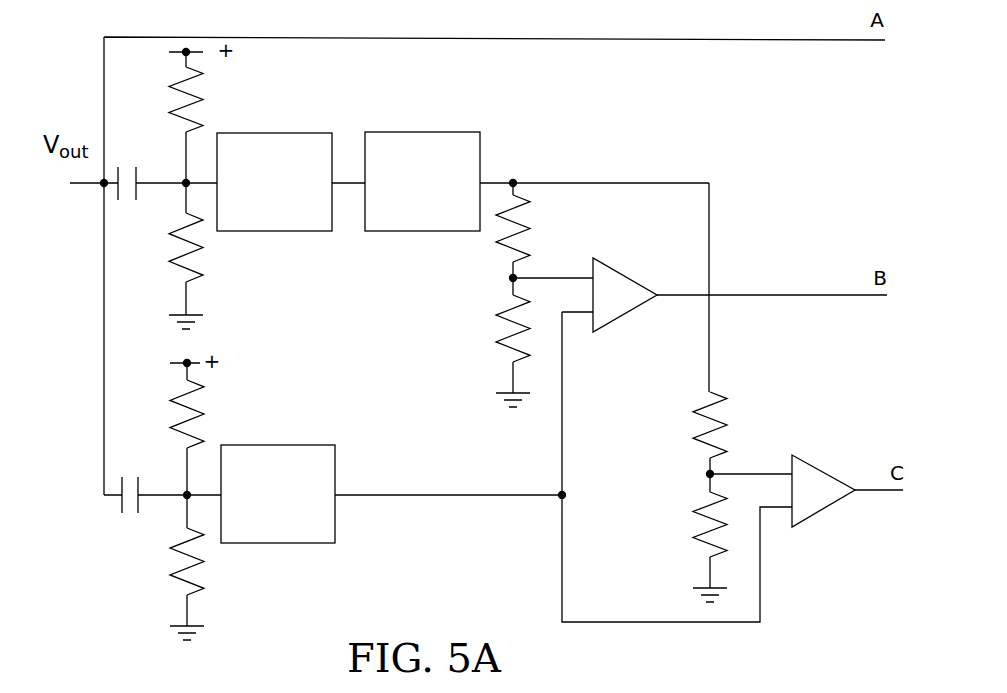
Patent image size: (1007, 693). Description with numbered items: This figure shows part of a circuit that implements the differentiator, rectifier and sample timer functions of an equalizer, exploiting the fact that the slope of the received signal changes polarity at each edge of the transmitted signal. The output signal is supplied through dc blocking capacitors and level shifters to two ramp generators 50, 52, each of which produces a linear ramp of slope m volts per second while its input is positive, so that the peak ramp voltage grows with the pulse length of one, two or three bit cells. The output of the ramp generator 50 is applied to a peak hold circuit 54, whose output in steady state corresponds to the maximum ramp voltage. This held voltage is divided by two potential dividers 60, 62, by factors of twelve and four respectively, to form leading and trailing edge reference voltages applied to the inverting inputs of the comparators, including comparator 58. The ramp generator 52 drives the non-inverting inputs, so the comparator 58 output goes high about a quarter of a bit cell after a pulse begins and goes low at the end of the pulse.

The ramp generator 50 is at (283, 232).
The ramp generator 52 is at (287, 543).
The peak hold circuit 54 is at (432, 232).
The comparator 58 is at (626, 278).
The potential divider 60 is at (677, 476).
The potential divider 62 is at (497, 297).